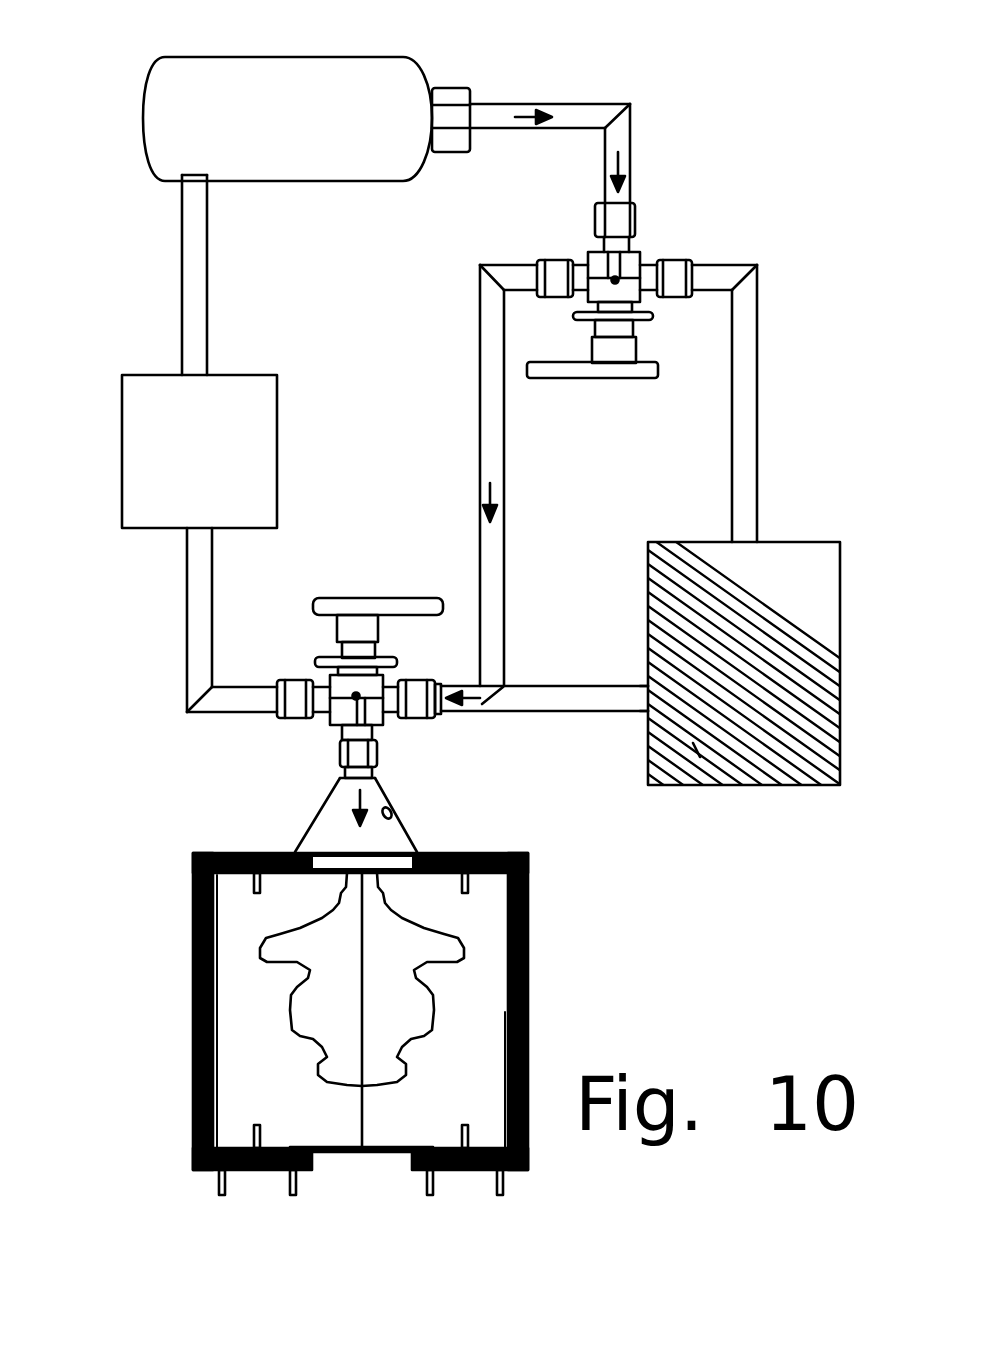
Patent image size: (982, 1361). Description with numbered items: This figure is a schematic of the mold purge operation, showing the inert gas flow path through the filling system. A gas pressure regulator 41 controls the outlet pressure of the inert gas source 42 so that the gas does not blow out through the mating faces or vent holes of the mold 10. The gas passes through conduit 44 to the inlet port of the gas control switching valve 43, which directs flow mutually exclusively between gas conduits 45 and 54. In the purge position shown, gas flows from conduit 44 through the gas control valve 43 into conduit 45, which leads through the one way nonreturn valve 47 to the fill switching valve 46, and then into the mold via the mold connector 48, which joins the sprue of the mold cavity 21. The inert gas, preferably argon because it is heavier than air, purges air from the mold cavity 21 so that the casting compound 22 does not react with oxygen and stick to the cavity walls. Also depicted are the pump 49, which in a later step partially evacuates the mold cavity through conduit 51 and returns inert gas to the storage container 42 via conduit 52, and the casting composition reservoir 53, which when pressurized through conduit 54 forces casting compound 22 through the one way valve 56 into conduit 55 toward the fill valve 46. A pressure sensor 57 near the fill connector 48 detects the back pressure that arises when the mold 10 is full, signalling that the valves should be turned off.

The mold 10 is at (193, 1035).
The mold cavity 21 is at (385, 987).
The casting compound 22 is at (693, 743).
The gas pressure regulator 41 is at (455, 88).
The inert gas source 42 is at (332, 137).
The gas control switching valve 43 is at (638, 256).
The conduit 44 is at (548, 103).
The gas conduit 45 is at (477, 365).
The fill switching valve 46 is at (359, 596).
The one way nonreturn valve 47 is at (480, 685).
The mold connector 48 is at (318, 815).
The pump 49 is at (225, 476).
The conduit 51 is at (186, 620).
The conduit 52 is at (183, 297).
The casting composition reservoir 53 is at (804, 535).
The gas conduit 54 is at (762, 340).
The conduit 55 is at (478, 713).
The one way valve 56 is at (645, 688).
The pressure sensor 57 is at (393, 809).